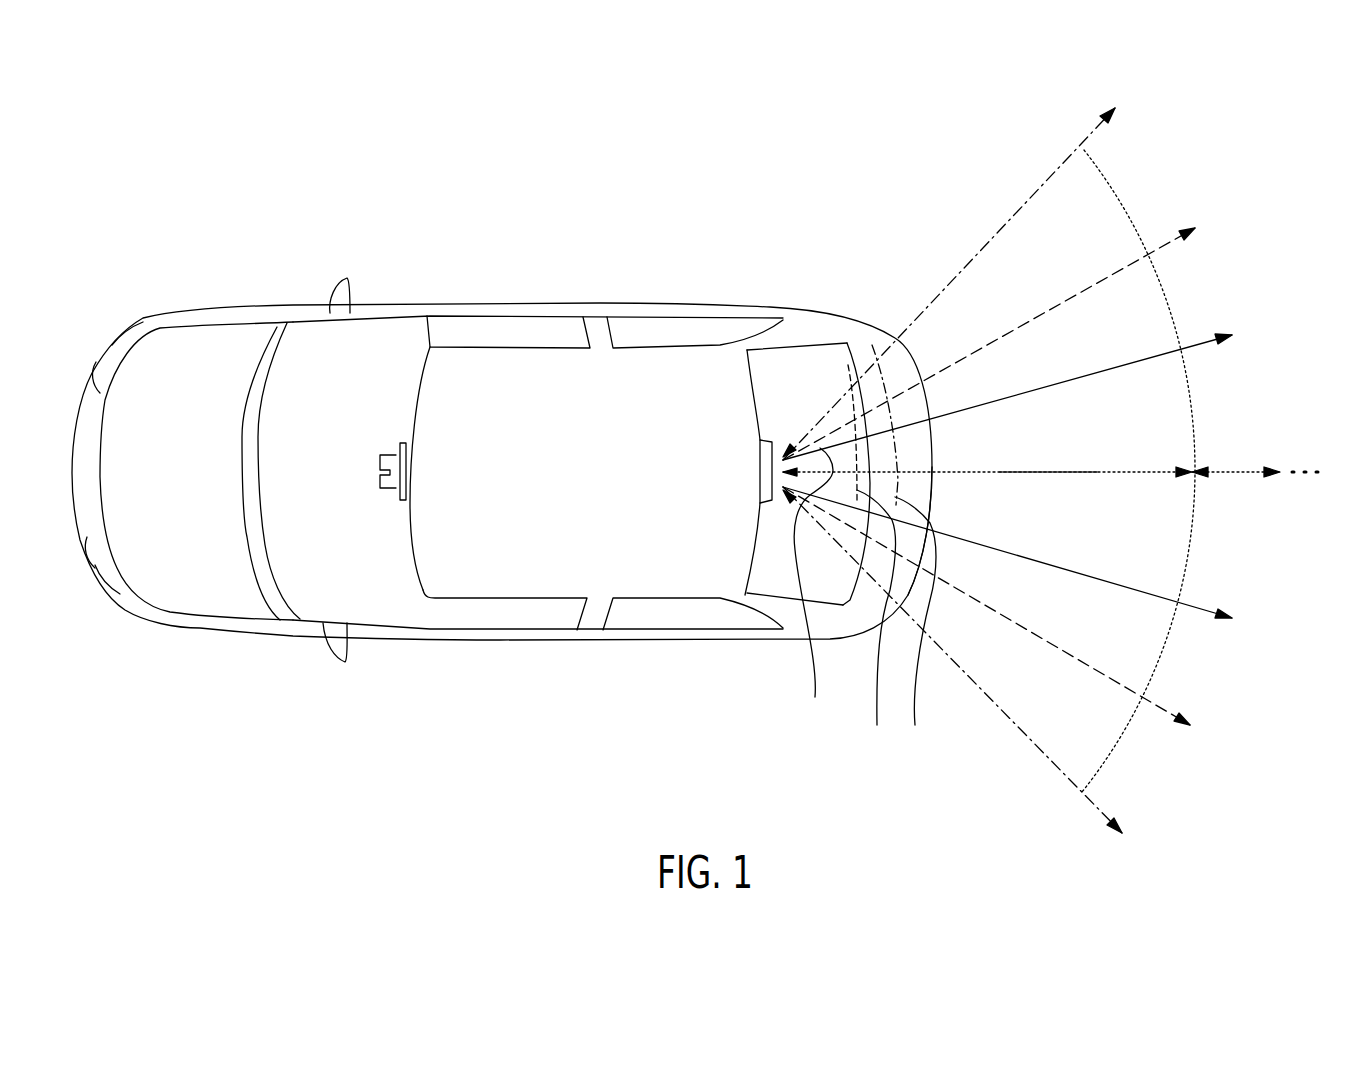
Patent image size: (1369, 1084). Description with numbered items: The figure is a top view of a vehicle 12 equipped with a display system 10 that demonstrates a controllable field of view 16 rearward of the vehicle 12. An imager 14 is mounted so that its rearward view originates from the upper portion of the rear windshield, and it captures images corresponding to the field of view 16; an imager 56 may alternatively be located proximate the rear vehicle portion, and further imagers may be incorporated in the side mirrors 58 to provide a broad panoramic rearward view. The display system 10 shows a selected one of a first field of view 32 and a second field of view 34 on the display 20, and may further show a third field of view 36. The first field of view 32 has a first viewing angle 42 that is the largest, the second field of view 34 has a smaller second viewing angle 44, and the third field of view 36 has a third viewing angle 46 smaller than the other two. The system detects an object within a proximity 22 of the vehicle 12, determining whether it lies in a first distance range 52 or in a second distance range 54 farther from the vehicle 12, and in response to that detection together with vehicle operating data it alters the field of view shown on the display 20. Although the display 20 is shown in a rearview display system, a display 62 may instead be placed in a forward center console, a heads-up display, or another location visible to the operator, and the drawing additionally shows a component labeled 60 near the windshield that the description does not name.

The display system 10 is at (740, 258).
The vehicle 12 is at (300, 313).
The imager 14 is at (790, 492).
The field of view 16 is at (1255, 572).
The display 20 is at (392, 490).
The proximity 22 is at (1087, 473).
The first field of view 32 is at (1050, 180).
The second field of view 34 is at (1167, 240).
The third field of view 36 is at (1203, 337).
The first viewing angle 42 is at (809, 586).
The second viewing angle 44 is at (872, 559).
The third viewing angle 46 is at (904, 552).
The first distance range 52 is at (1022, 475).
The second distance range 54 is at (1247, 477).
The imager 56 is at (937, 467).
The side mirrors 58 is at (345, 283).
The camera 60 is at (397, 438).
The display 62 is at (290, 500).